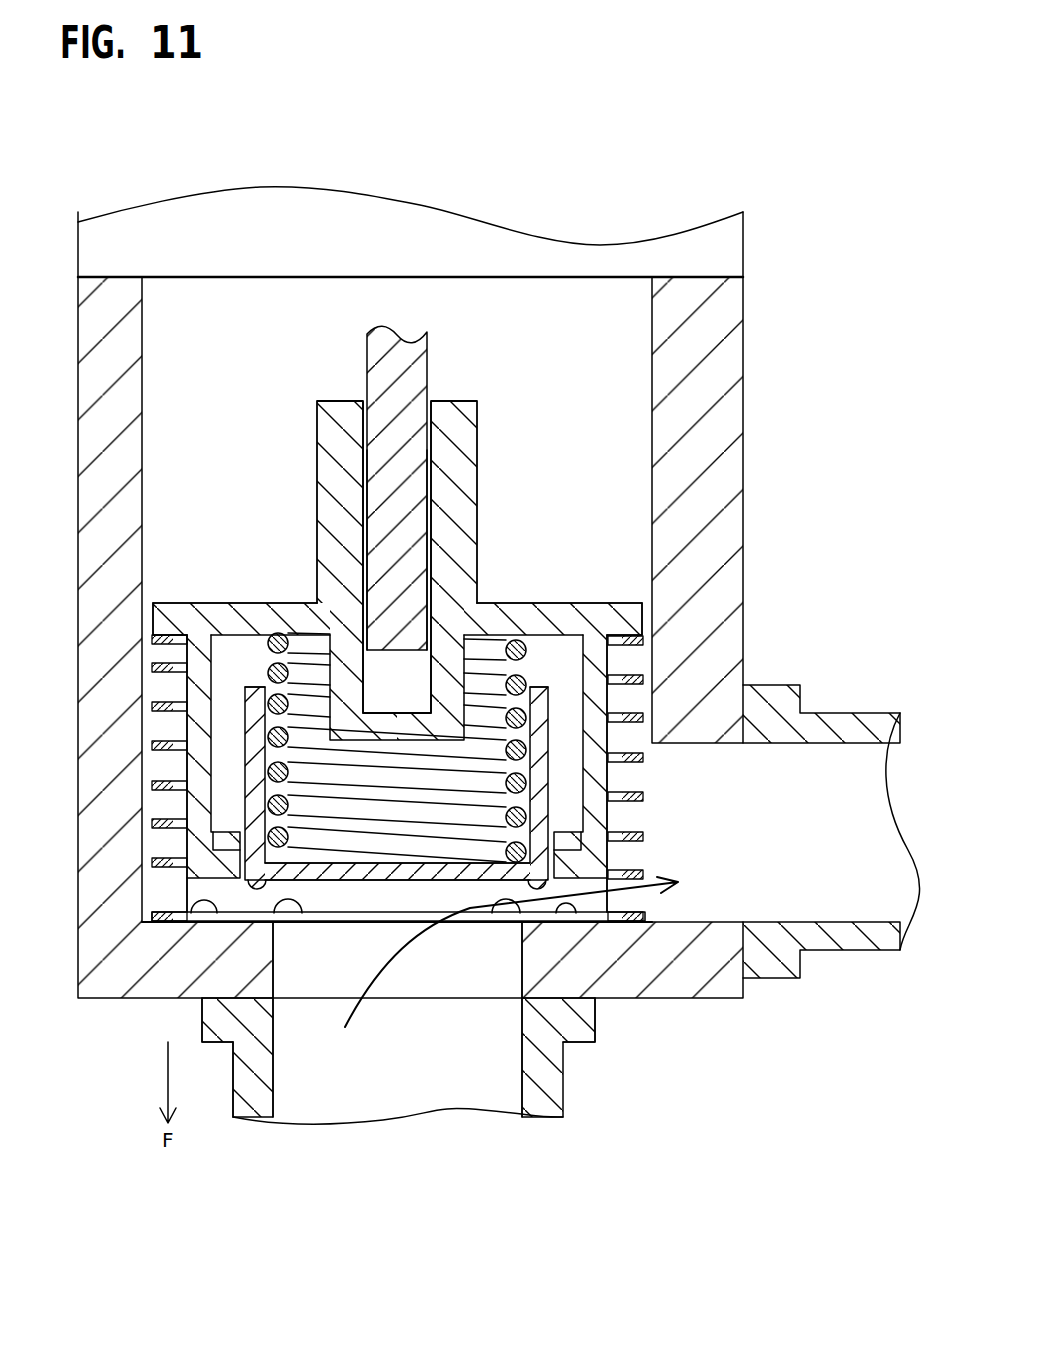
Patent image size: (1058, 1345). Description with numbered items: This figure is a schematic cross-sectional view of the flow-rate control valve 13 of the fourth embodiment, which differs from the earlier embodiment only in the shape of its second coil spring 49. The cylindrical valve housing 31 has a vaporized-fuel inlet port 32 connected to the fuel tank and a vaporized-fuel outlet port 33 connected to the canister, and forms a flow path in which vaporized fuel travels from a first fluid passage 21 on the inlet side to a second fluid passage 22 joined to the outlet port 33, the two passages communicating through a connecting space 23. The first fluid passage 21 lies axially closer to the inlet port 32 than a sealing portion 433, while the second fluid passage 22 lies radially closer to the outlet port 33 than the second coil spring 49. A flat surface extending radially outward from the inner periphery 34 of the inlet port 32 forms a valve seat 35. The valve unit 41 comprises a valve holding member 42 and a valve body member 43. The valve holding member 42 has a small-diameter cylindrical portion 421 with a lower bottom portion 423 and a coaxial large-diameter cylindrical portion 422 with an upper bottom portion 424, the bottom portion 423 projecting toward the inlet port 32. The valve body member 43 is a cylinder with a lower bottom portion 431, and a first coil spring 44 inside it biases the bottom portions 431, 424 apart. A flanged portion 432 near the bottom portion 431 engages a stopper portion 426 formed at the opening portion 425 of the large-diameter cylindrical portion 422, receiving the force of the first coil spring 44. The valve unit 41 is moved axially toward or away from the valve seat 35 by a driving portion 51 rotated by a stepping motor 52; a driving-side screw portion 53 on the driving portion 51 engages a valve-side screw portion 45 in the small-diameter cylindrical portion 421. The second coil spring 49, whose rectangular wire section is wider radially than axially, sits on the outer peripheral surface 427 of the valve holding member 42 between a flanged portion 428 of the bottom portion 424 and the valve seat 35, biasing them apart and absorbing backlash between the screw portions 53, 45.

The flow-rate control valve 13 is at (620, 178).
The first fluid passage 21 is at (403, 897).
The second fluid passage 22 is at (668, 903).
The connecting space 23 is at (606, 885).
The valve housing 31 is at (117, 312).
The vaporized-fuel inlet port 32 is at (287, 1103).
The vaporized-fuel outlet port 33 is at (870, 778).
The inner periphery 34 is at (303, 920).
The valve seat 35 is at (166, 995).
The valve unit 41 is at (183, 605).
The valve holding member 42 is at (187, 653).
The valve body member 43 is at (247, 726).
The first coil spring 44 is at (262, 798).
The valve-side screw portion 45 is at (395, 493).
The second coil spring 49 is at (165, 750).
The driving portion 51 is at (378, 366).
The stepping motor 52 is at (112, 258).
The driving-side screw portion 53 is at (360, 455).
The small-diameter cylindrical portion 421 is at (330, 427).
The large-diameter cylindrical portion 422 is at (240, 607).
The bottom portion 423 is at (382, 728).
The bottom portion 424 is at (270, 613).
The opening portion 425 is at (150, 910).
The stopper portion 426 is at (245, 885).
The outer peripheral surface 427 is at (243, 687).
The flanged portion 428 is at (167, 614).
The bottom portion 431 is at (257, 893).
The flanged portion 432 is at (222, 836).
The sealing portion 433 is at (222, 1000).